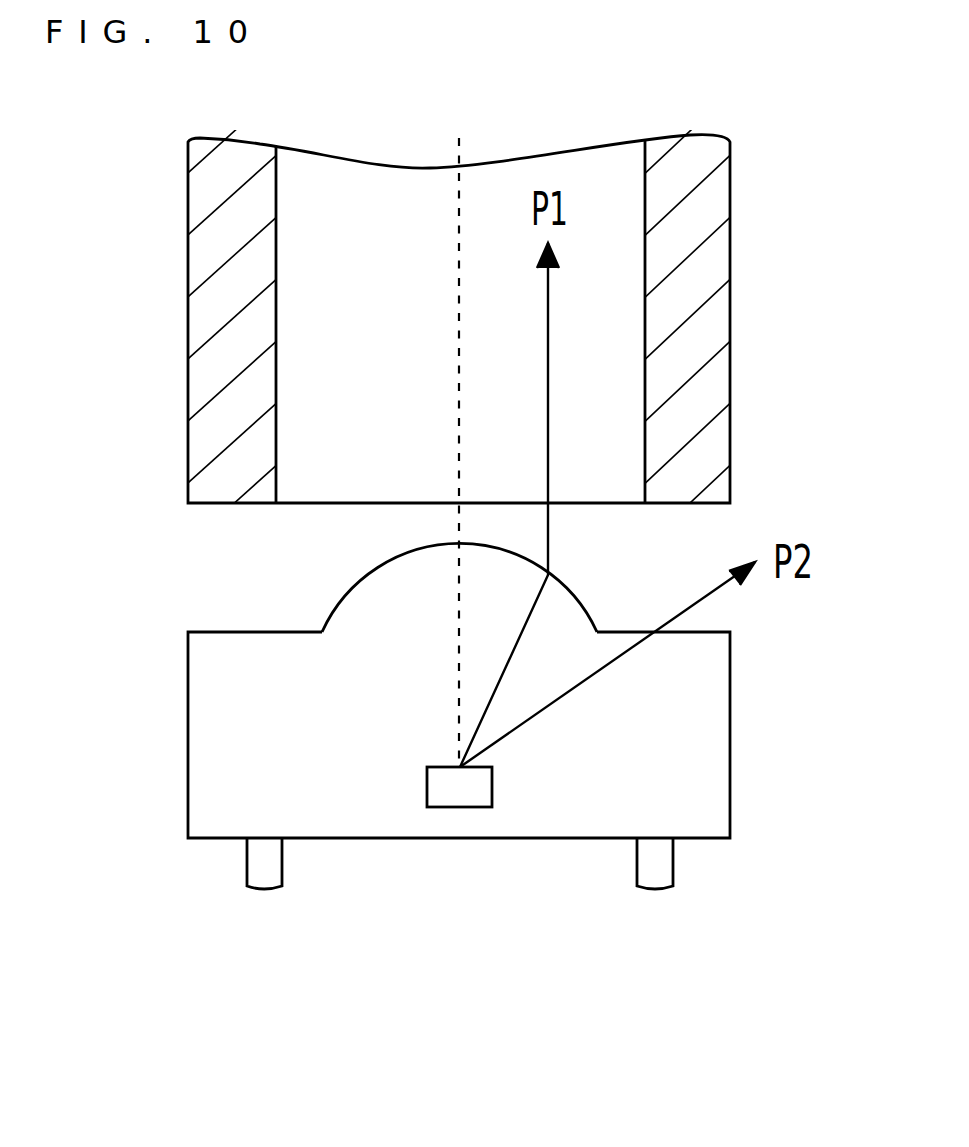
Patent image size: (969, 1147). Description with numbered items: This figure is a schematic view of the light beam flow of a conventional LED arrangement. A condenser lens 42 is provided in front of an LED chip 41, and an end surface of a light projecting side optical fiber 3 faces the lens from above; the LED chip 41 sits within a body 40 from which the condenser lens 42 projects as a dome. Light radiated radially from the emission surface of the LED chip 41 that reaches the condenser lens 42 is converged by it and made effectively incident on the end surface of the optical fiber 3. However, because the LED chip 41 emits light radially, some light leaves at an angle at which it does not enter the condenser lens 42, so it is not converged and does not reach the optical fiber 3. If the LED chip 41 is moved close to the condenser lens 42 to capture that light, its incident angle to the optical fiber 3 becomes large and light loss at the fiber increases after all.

The light projecting side optical fiber 3 is at (730, 253).
The light emitting device body 40 is at (730, 760).
The LED chip 41 is at (462, 808).
The condenser lens 42 is at (345, 592).